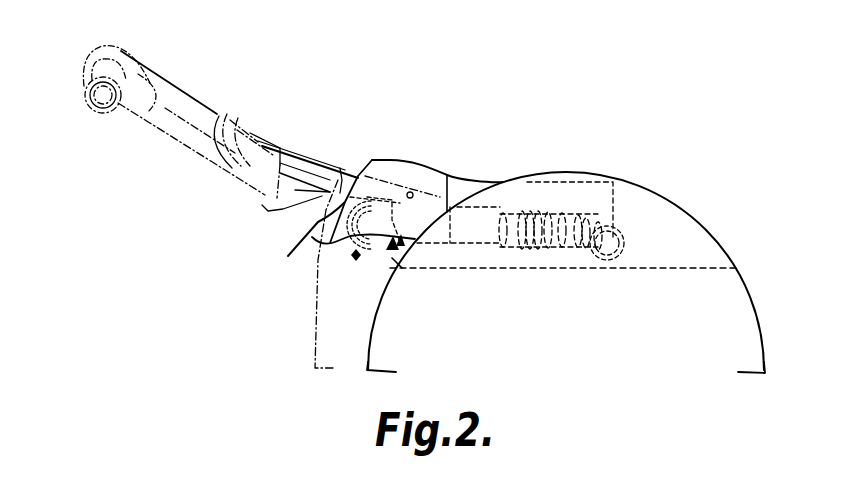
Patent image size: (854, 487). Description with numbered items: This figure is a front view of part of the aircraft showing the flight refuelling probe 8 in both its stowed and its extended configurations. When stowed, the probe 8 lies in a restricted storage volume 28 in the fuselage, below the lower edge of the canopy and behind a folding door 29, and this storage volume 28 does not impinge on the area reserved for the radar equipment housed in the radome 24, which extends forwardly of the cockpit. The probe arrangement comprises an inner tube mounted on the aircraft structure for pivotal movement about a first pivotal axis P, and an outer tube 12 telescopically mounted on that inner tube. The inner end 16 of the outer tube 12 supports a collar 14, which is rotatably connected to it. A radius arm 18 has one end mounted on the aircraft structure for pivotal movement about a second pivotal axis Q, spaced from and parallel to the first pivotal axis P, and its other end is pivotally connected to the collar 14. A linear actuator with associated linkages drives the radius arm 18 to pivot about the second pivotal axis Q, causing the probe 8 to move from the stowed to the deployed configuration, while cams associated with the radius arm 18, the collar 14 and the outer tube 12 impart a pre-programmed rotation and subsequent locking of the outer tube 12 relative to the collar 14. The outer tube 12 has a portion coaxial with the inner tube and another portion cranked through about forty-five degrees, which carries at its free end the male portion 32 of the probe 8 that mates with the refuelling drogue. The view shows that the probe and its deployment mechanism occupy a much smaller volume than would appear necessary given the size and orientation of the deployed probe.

The flight refuelling probe 8 is at (200, 86).
The outer tube 12 is at (172, 142).
The collar 14 is at (247, 140).
The inner end 16 is at (207, 140).
The radius arm 18 is at (334, 163).
The radome 24 is at (649, 323).
The storage volume 28 is at (508, 262).
The folding door 29 is at (314, 236).
The male portion 32 is at (87, 73).
The first pivotal axis P is at (357, 262).
The second pivotal axis Q is at (393, 262).